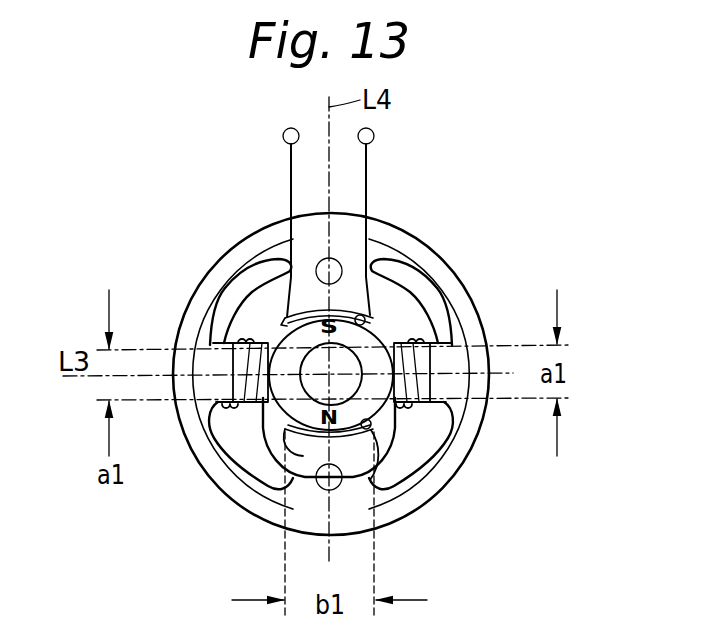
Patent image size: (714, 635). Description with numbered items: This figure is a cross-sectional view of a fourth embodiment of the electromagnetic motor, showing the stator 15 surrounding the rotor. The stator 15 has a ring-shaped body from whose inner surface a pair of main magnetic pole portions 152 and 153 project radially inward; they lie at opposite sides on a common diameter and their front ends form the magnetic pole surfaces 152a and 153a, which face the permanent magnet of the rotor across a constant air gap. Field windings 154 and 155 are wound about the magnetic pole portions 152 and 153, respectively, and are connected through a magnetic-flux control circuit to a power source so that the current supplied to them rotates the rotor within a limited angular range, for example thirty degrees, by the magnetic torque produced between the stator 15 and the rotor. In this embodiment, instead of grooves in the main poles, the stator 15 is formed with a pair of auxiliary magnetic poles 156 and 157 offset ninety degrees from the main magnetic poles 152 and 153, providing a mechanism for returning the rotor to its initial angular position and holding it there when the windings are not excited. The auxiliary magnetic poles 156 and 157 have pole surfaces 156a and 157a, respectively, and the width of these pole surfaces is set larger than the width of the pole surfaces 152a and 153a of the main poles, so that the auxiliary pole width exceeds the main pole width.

The stator 15 is at (458, 238).
The magnetic pole portion 152 is at (246, 362).
The magnetic pole surface 152a is at (266, 440).
The magnetic pole portion 153 is at (418, 362).
The magnetic pole surface 153a is at (417, 455).
The field winding 154 is at (214, 406).
The field winding 155 is at (412, 378).
The auxiliary magnetic pole 156 is at (315, 295).
The pole surface 156a is at (364, 316).
The auxiliary magnetic pole 157 is at (312, 457).
The pole surface 157a is at (373, 436).